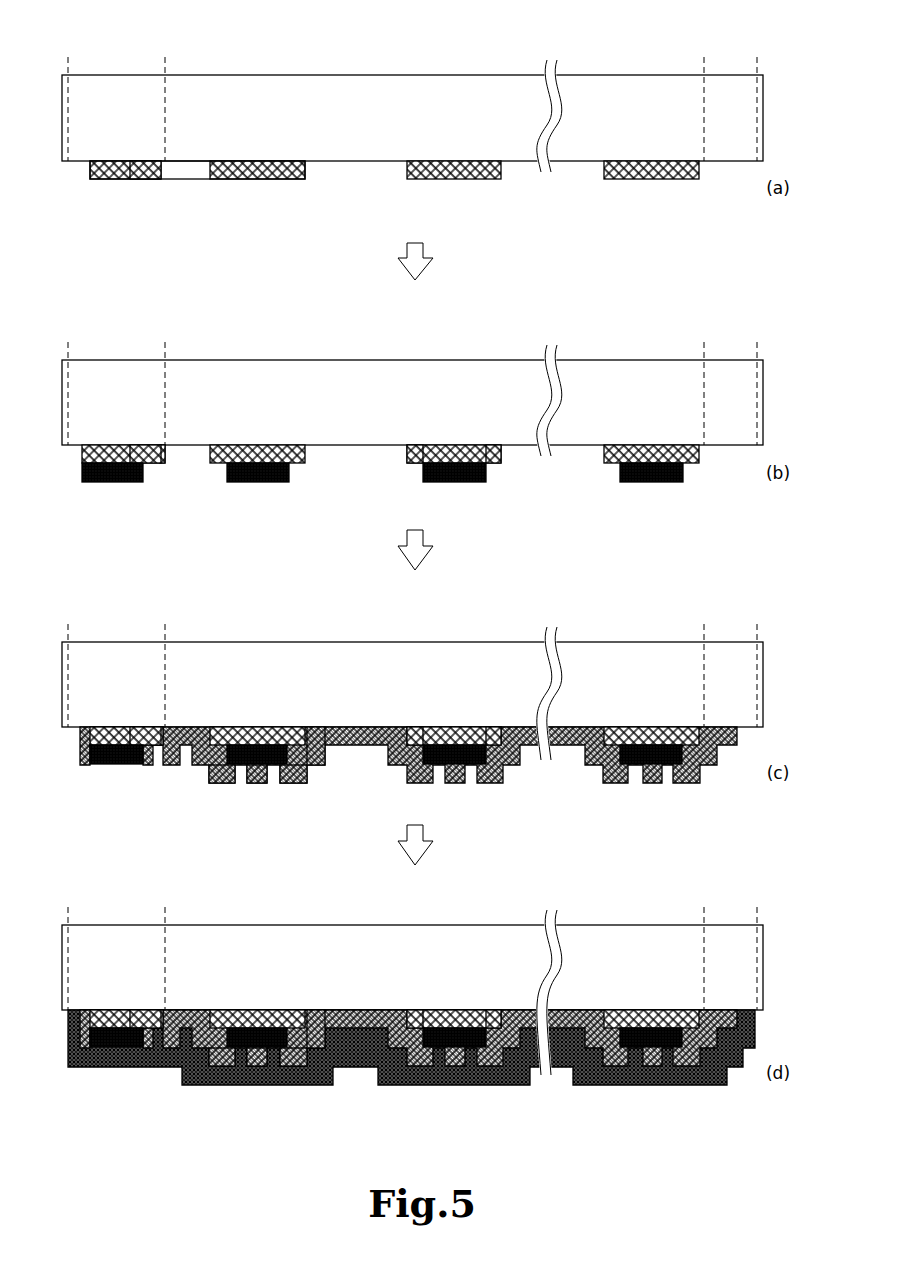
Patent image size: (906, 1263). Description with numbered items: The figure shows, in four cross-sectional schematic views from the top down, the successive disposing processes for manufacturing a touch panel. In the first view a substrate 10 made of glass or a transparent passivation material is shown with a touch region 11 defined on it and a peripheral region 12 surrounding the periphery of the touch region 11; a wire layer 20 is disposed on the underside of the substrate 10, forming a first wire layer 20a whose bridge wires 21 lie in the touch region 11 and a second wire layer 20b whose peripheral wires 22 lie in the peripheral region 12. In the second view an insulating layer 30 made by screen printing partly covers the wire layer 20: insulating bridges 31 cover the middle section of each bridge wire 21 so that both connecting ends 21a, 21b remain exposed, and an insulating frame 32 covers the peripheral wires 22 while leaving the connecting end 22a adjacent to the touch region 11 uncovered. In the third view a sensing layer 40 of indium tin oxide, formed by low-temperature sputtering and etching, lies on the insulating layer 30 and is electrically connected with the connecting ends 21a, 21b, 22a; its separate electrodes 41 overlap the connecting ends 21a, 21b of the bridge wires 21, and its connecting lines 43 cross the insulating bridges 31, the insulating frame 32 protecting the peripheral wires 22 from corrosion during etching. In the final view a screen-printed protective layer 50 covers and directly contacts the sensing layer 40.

The substrate 10 is at (105, 127).
The touch region 11 is at (165, 58).
The peripheral region 12 is at (165, 58).
The wire layer 20 is at (235, 224).
The first wire layer 20a is at (238, 182).
The second wire layer 20b is at (138, 182).
The bridge wire 21 is at (480, 182).
The connecting end 21a is at (412, 466).
The connecting end 21b is at (495, 466).
The peripheral wire 22 is at (125, 182).
The connecting end 22a is at (167, 455).
The insulating layer 30 is at (668, 485).
The insulating bridge 31 is at (454, 485).
The insulating frame 32 is at (116, 485).
The sensing layer 40 is at (345, 814).
The separate electrode 41 is at (340, 760).
The connecting line 43 is at (262, 784).
The protective layer 50 is at (668, 1086).